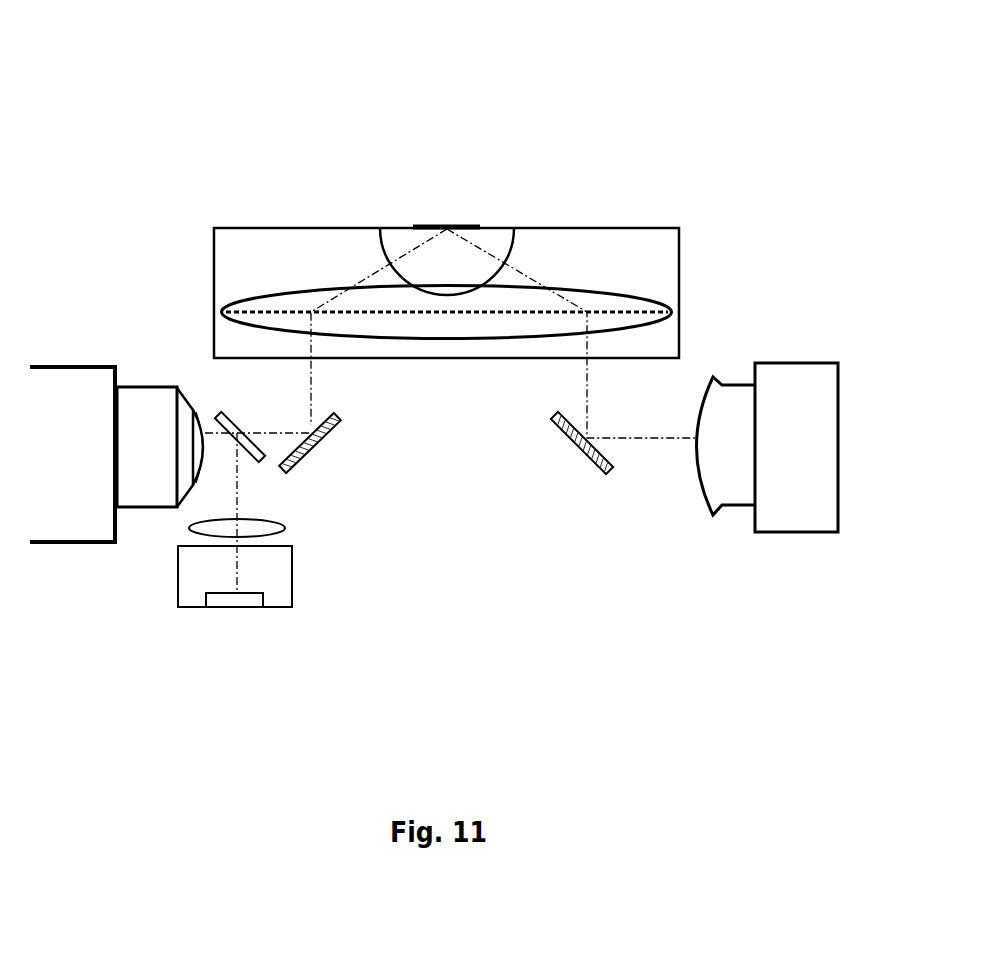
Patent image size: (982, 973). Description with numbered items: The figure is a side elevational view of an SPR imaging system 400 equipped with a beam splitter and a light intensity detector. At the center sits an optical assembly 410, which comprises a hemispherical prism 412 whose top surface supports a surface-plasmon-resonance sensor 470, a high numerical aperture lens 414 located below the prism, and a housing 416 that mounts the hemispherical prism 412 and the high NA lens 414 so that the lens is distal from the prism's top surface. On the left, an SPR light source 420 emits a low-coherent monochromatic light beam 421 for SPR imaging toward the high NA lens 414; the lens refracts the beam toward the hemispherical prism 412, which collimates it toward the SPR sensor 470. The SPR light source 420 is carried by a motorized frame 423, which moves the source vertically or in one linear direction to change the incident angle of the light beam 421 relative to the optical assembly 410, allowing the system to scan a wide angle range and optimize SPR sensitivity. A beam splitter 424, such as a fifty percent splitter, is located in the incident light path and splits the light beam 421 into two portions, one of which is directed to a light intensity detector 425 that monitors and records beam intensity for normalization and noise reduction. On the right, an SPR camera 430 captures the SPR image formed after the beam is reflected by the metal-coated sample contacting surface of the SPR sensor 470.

The SPR imaging system 400 is at (192, 134).
The optical assembly 410 is at (712, 270).
The hemispherical prism 412 is at (462, 280).
The high numerical aperture lens 414 is at (447, 317).
The housing 416 is at (679, 298).
The surface-plasmon-resonance sensor 470 is at (427, 227).
The SPR light source 420 is at (165, 463).
The low-coherent monochromatic light beam 421 is at (204, 412).
The motorized frame 423 is at (92, 463).
The beam splitter 424 is at (223, 417).
The light intensity detector 425 is at (293, 575).
The SPR camera 430 is at (822, 467).